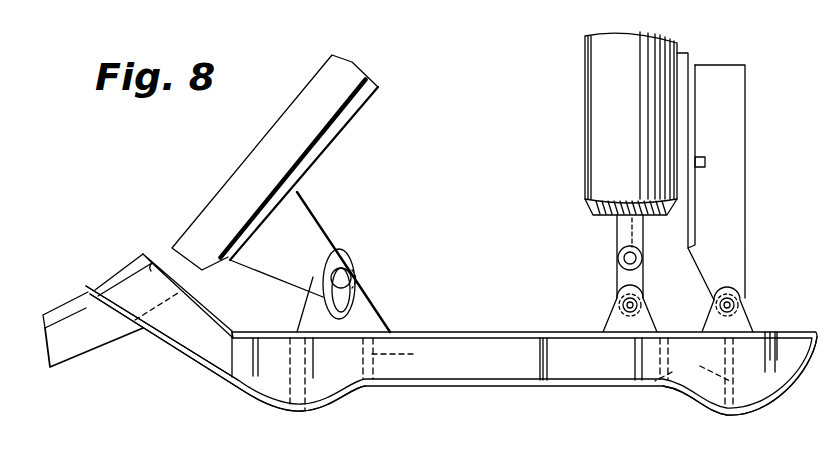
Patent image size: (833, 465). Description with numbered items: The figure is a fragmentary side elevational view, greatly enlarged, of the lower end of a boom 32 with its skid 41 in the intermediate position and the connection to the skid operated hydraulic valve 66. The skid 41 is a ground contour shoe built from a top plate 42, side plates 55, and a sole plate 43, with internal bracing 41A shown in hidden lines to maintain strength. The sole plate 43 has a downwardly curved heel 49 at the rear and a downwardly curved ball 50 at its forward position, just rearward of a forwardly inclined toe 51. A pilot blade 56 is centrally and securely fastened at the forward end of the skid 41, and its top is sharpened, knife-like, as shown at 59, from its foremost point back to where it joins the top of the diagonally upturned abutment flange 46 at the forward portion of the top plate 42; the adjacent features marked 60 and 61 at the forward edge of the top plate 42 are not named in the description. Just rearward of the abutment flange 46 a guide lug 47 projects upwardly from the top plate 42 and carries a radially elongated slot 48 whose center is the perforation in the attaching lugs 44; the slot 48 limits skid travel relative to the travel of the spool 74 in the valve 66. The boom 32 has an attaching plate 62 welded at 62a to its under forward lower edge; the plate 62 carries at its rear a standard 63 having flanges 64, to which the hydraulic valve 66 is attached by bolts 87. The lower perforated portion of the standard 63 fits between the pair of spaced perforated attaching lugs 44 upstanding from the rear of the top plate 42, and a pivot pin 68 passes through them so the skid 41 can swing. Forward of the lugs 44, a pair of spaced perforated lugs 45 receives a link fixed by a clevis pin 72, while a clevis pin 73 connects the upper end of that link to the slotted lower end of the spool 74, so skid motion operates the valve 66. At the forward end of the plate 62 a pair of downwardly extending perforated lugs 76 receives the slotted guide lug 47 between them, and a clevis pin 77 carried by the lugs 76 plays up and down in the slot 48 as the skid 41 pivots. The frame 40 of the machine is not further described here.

The boom 32 is at (280, 118).
The attaching plate 62 is at (333, 133).
The weld 62a is at (355, 108).
The skid operated hydraulic valve 66 is at (593, 120).
The bolts 87 is at (708, 158).
The flanges 64 is at (693, 200).
The standard 63 is at (737, 202).
The spaced perforated lugs 76 is at (303, 223).
The clevis pin 77 is at (350, 270).
The guide lug 47 is at (372, 300).
The spool 74 is at (623, 227).
The clevis pin 73 is at (618, 258).
The pivot pin 68 is at (740, 292).
The perforated attaching lugs 44 is at (757, 307).
The clevis pin 72 is at (637, 305).
The perforated lugs 45 is at (610, 308).
The top plate 42 is at (462, 328).
The notch 61 is at (152, 262).
The bent edge 60 is at (88, 290).
The sharpened top edge 59 is at (65, 305).
The abutment flange 46 is at (197, 300).
The elongated slot 48 is at (332, 303).
The pilot blade 56 is at (78, 345).
The toe 51 is at (178, 353).
The side plates 55 is at (418, 365).
The internal bracing 41A is at (552, 371).
The skid 41 is at (494, 388).
The sole plate 43 is at (593, 383).
The ball 50 is at (292, 407).
The heel 49 is at (747, 413).
The frame 40 is at (572, 461).